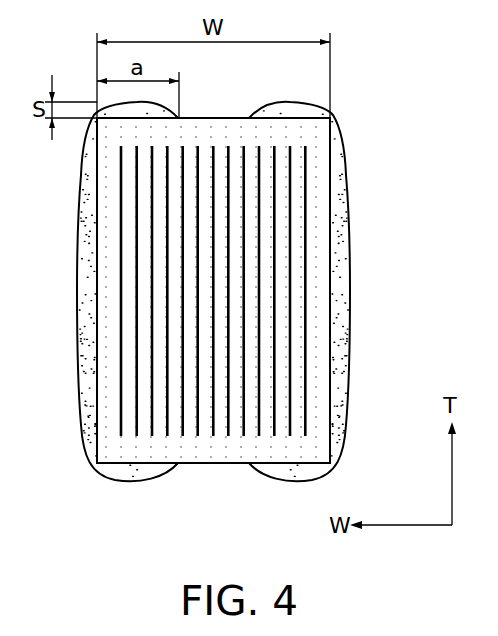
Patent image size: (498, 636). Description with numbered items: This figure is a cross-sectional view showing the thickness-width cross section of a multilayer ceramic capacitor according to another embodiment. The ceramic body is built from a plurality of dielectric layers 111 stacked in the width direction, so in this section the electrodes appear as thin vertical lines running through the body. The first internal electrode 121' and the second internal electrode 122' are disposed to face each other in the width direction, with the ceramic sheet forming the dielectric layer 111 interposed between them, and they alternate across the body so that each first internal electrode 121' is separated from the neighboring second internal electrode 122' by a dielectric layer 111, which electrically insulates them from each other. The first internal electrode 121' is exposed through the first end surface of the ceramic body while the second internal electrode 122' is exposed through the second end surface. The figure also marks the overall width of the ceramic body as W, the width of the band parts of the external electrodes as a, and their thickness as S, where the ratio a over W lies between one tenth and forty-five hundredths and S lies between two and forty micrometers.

The dielectric layer 111 is at (297, 287).
The first internal electrode 121' is at (274, 291).
The second internal electrode 122' is at (282, 291).